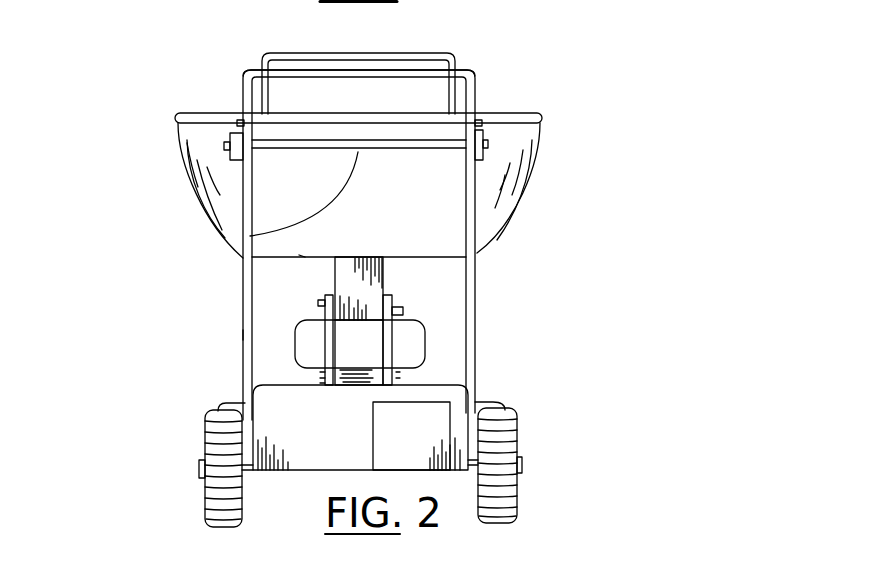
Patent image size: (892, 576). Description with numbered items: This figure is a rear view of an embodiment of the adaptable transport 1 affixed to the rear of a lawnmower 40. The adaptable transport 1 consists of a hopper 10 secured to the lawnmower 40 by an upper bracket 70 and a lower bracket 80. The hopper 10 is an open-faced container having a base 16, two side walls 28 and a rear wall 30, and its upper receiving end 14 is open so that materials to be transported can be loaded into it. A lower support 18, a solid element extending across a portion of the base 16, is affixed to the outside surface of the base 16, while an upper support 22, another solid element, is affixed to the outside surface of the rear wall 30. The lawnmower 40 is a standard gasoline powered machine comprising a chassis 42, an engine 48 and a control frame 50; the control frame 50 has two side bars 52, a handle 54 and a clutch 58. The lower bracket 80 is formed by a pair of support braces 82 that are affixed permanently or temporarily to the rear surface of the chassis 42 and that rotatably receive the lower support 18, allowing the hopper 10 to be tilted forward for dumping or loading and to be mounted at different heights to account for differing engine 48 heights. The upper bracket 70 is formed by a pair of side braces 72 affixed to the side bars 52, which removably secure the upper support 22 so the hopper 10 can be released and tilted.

The adaptable transport 1 is at (572, 170).
The hopper 10 is at (307, 194).
The upper receiving end 14 is at (197, 113).
The base 16 is at (299, 255).
The lower support 18 is at (370, 288).
The upper support 22 is at (250, 236).
The side walls 28 is at (190, 192).
The rear wall 30 is at (418, 227).
The lawnmower 40 is at (545, 460).
The chassis 42 is at (337, 453).
The engine 48 is at (370, 354).
The control frame 50 is at (240, 323).
The side bars 52 is at (475, 360).
The handle 54 is at (243, 70).
The clutch 58 is at (415, 53).
The upper bracket 70 is at (490, 133).
The side braces 72 is at (482, 153).
The lower bracket 80 is at (407, 308).
The support braces 82 is at (392, 348).